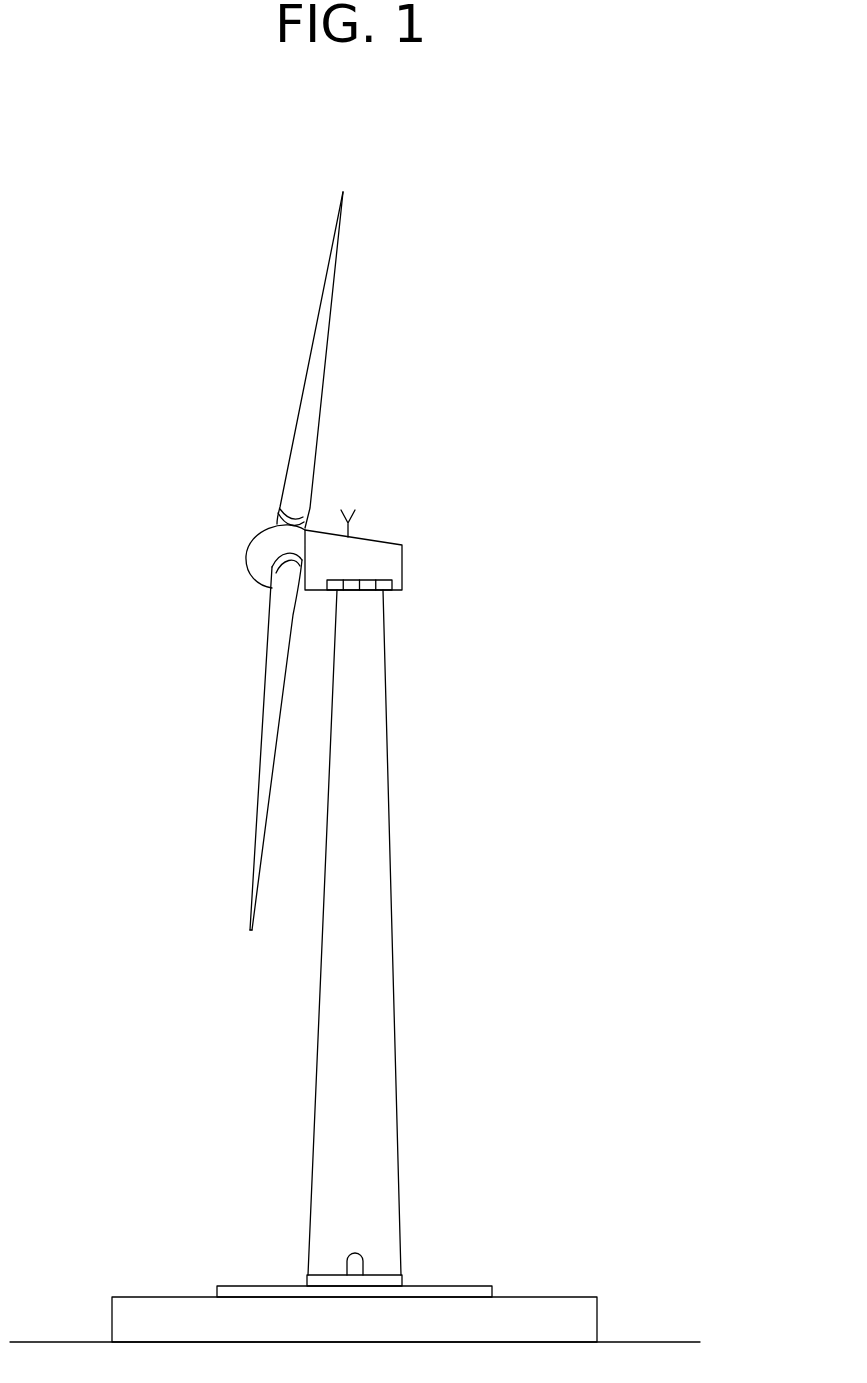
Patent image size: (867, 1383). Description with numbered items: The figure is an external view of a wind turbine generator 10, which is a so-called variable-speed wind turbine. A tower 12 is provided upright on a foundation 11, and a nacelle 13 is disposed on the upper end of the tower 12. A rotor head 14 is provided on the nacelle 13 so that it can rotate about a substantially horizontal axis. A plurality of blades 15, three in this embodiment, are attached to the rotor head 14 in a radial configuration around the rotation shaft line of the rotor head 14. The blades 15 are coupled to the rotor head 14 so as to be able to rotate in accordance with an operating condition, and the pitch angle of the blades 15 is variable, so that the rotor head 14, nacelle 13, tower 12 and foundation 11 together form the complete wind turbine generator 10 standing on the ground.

The wind turbine generator 10 is at (515, 490).
The foundation 11 is at (558, 1296).
The tower 12 is at (388, 777).
The nacelle 13 is at (372, 533).
The rotor head 14 is at (247, 553).
The blade 15 is at (333, 300).